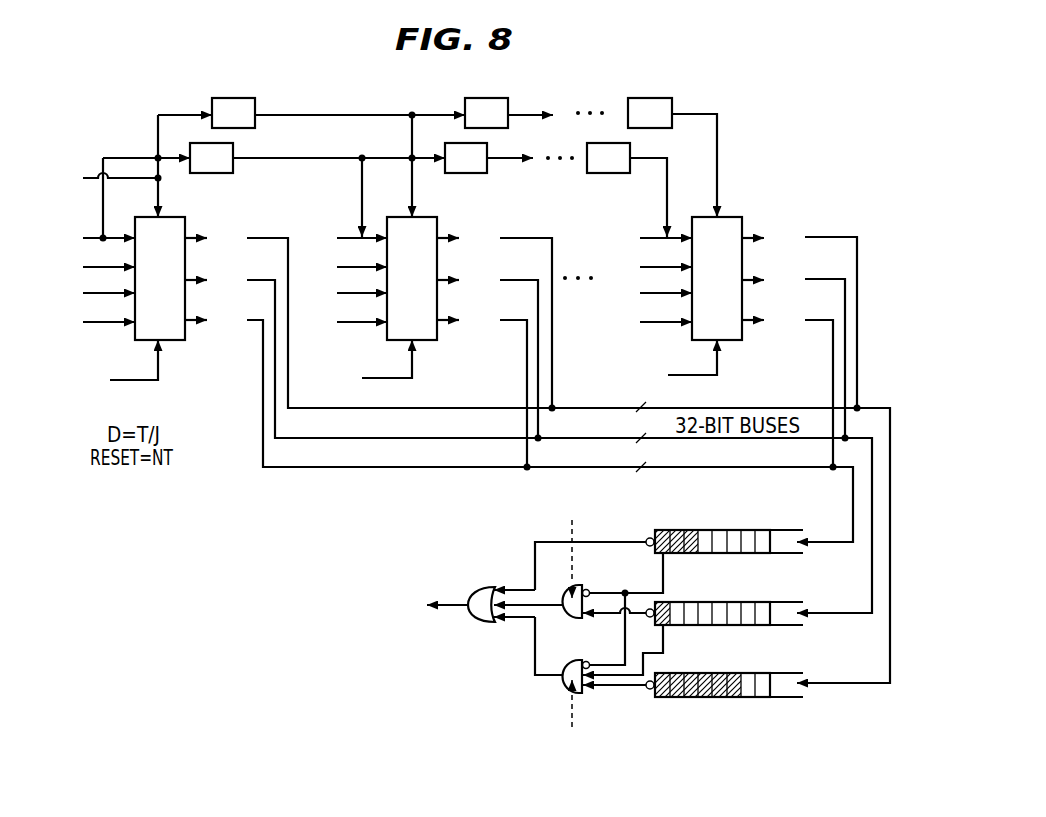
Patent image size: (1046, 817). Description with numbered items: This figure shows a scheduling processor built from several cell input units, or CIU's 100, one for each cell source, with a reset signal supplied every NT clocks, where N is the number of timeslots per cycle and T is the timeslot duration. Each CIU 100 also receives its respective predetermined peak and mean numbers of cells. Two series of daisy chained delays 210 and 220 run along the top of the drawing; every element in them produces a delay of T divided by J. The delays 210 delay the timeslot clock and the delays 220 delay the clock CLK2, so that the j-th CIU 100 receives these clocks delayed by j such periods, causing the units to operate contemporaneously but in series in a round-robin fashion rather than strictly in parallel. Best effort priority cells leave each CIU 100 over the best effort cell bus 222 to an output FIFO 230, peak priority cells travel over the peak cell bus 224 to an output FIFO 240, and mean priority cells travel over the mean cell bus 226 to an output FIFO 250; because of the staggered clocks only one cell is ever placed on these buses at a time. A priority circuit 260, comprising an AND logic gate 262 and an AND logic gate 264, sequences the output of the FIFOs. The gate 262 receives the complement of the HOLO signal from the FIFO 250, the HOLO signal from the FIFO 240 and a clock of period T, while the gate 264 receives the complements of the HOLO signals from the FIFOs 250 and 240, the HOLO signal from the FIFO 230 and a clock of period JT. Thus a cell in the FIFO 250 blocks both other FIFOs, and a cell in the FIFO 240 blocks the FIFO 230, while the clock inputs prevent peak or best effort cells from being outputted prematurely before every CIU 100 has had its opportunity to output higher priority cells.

The cell input unit (CIU) 100 is at (173, 340).
The daisy chained delays 210 is at (152, 155).
The daisy chained delays 220 is at (175, 108).
The best effort cell bus 222 is at (581, 406).
The peak cell bus 224 is at (566, 431).
The mean cell bus 226 is at (566, 461).
The output FIFO 230 is at (722, 697).
The output FIFO 240 is at (715, 625).
The output FIFO 250 is at (707, 553).
The priority circuit 260 is at (500, 625).
The AND logic gate 262 is at (562, 596).
The AND logic gate 264 is at (566, 660).